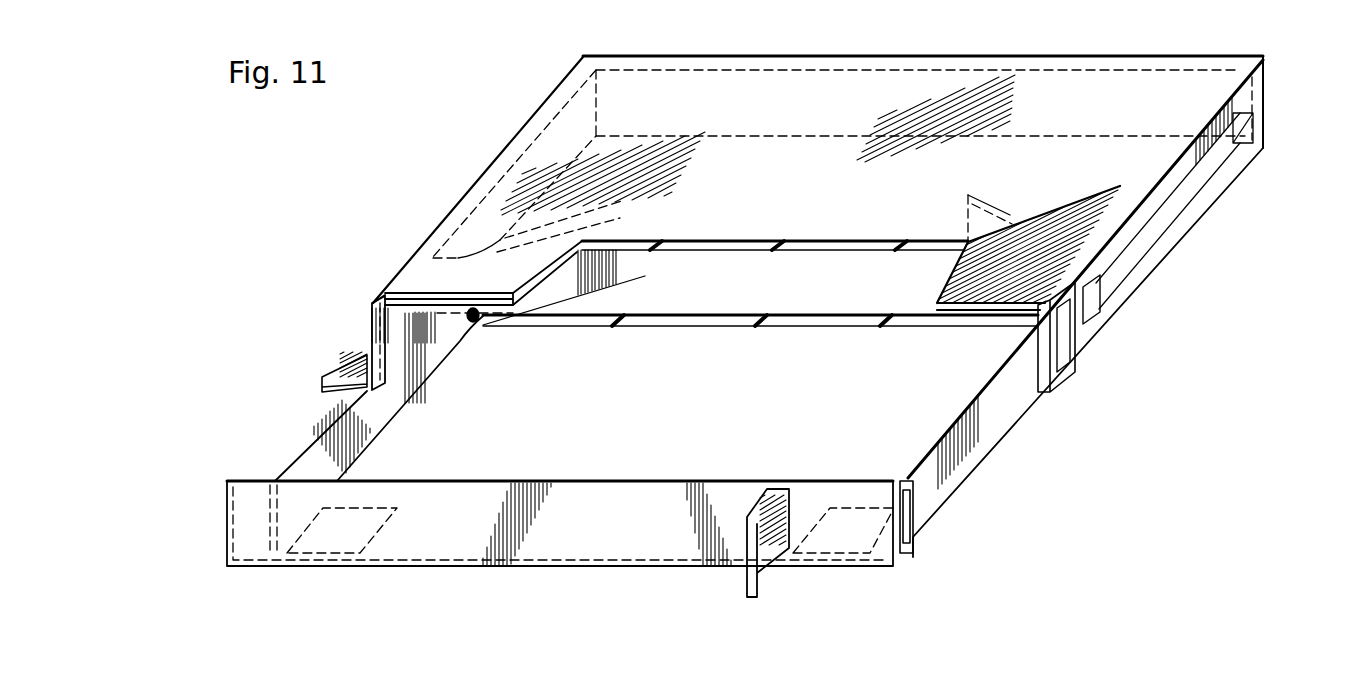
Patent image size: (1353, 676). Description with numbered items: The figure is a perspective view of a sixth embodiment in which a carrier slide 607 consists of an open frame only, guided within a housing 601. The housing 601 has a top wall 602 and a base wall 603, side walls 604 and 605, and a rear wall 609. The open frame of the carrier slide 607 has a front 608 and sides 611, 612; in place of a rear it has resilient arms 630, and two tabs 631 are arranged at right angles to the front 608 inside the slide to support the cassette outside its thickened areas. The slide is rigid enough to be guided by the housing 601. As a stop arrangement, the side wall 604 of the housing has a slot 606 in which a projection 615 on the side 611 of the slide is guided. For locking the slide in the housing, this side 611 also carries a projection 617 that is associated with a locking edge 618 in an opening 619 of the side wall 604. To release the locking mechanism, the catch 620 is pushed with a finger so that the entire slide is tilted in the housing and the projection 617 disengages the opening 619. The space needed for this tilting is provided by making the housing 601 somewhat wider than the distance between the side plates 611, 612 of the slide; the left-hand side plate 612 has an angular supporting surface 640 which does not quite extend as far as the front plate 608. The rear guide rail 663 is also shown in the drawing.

The housing 601 is at (1058, 58).
The top wall 602 is at (515, 183).
The base wall 603 is at (725, 328).
The side wall 604 is at (1166, 247).
The side wall 605 is at (565, 132).
The slot 606 is at (1197, 197).
The carrier slide 607 is at (1020, 419).
The front 608 is at (560, 523).
The rear wall 609 is at (797, 104).
The side 611 is at (985, 440).
The side 612 is at (378, 410).
The projection 615 is at (1097, 306).
The projection 617 is at (915, 537).
The locking edge 618 is at (1063, 356).
The opening 619 is at (1073, 338).
The catch 620 is at (762, 578).
The resilient arms 630 is at (641, 274).
The tabs 631 is at (383, 527).
The angular supporting surface 640 is at (365, 359).
The rear guide rail 663 is at (800, 254).